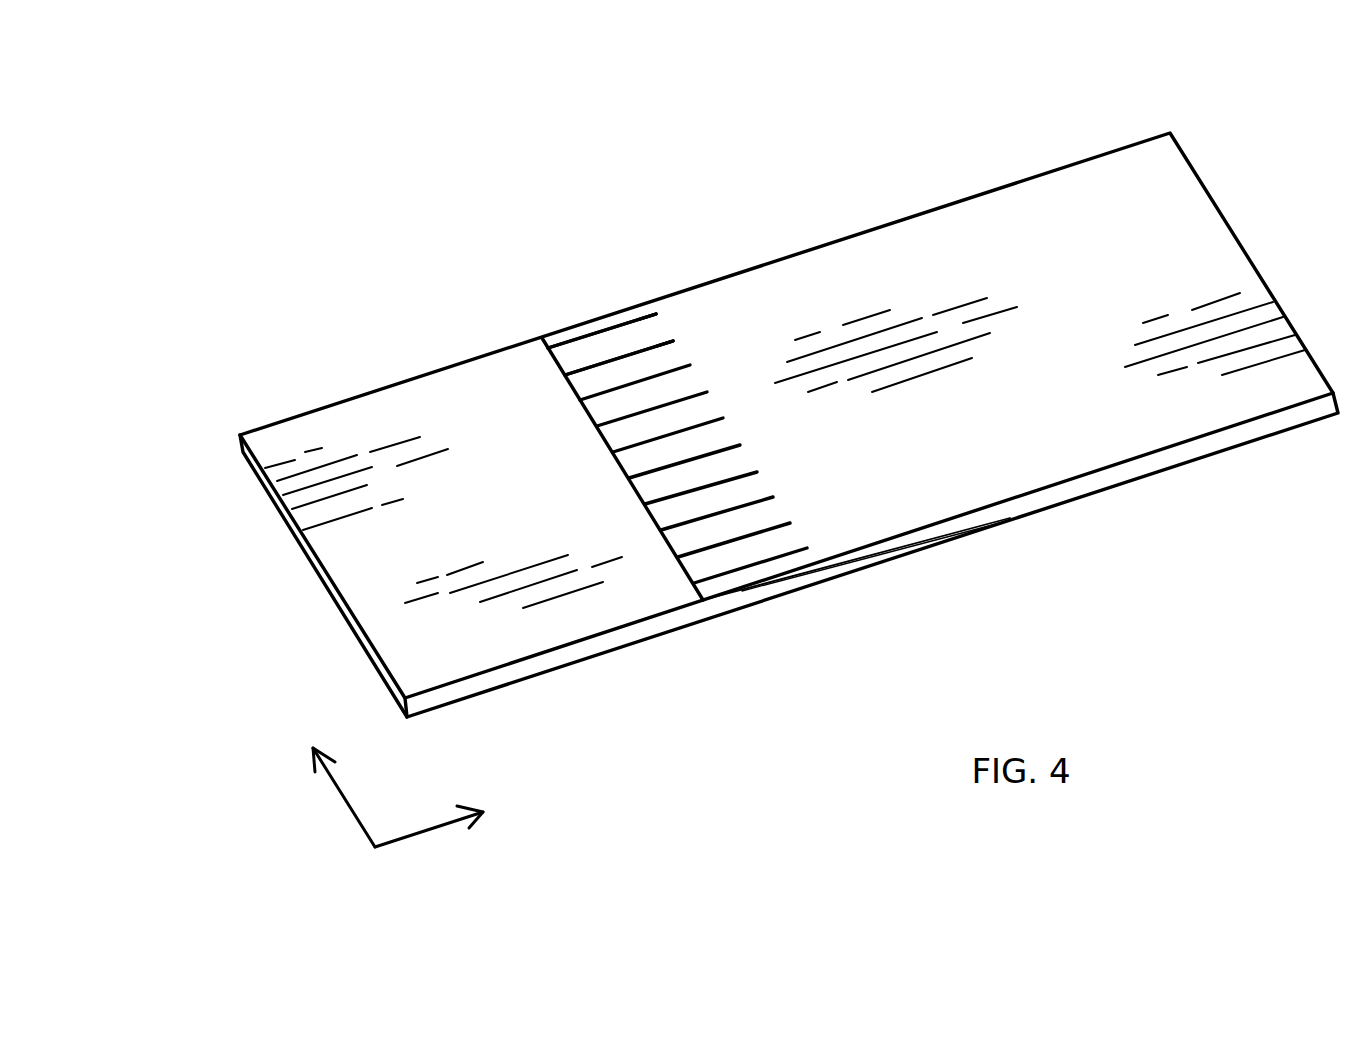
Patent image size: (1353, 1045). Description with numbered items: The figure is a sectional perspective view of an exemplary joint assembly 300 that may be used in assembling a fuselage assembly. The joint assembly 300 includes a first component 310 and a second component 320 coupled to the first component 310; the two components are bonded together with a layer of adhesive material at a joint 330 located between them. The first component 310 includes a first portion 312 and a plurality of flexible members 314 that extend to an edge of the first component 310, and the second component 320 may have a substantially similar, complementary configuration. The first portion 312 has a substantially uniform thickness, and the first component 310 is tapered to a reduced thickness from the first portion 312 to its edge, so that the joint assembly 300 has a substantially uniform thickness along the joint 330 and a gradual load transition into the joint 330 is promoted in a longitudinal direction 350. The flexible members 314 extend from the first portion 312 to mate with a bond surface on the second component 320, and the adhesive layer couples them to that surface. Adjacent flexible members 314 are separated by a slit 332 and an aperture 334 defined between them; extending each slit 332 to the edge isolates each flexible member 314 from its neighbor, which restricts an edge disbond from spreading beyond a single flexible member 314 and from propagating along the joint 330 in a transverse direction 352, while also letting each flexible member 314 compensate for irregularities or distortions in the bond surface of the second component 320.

The joint assembly 300 is at (180, 131).
The first component 310 is at (1171, 133).
The first portion 312 is at (1062, 203).
The flexible members 314 is at (583, 385).
The second component 320 is at (240, 435).
The joint 330 is at (658, 234).
The slit 332 is at (606, 362).
The aperture 334 is at (673, 342).
The longitudinal direction 350 is at (423, 832).
The transverse direction 352 is at (343, 798).